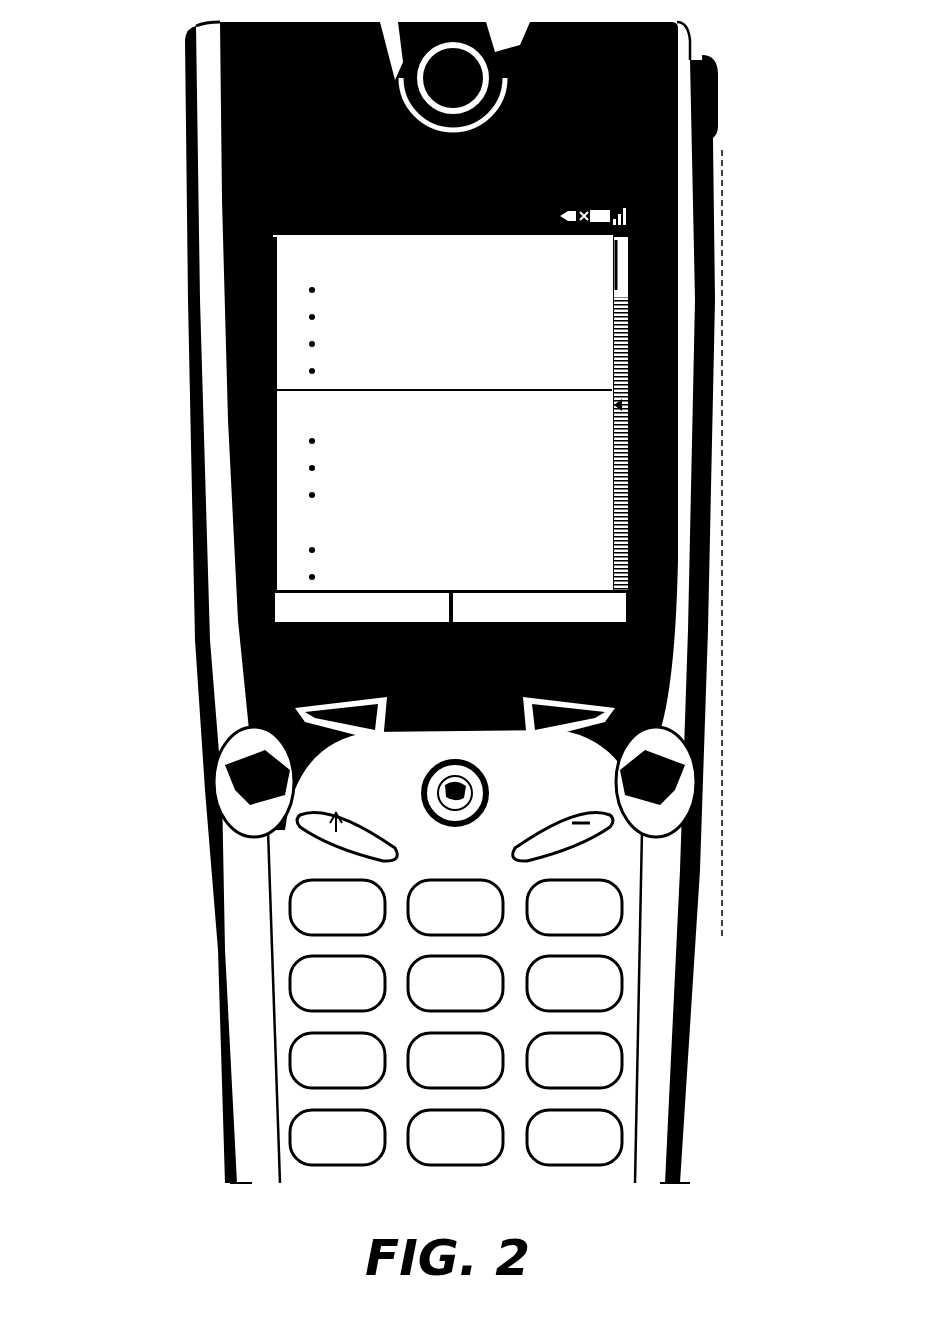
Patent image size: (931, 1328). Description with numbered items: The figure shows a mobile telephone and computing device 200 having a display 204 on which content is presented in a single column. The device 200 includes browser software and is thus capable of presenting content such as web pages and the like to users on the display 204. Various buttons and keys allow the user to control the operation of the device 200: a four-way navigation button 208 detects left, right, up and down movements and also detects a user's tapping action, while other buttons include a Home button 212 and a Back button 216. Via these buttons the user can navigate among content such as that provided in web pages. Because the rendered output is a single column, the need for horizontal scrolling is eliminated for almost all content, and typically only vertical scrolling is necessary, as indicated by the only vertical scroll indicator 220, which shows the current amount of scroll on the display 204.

The mobile telephone and computing device 200 is at (192, 407).
The display 204 is at (302, 493).
The four-way navigation button 208 is at (446, 832).
The Home button 212 is at (304, 819).
The Back button 216 is at (606, 820).
The vertical scroll indicator 220 is at (626, 405).